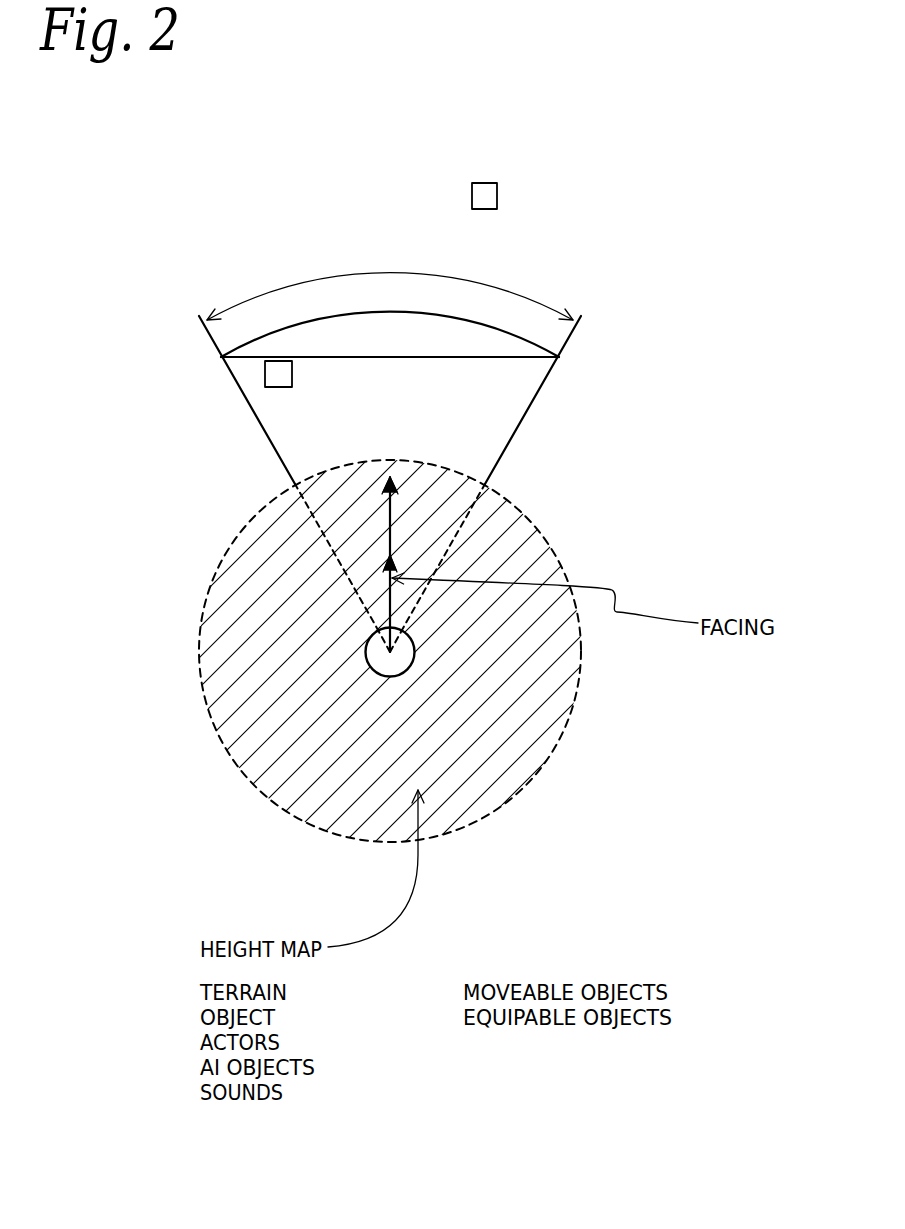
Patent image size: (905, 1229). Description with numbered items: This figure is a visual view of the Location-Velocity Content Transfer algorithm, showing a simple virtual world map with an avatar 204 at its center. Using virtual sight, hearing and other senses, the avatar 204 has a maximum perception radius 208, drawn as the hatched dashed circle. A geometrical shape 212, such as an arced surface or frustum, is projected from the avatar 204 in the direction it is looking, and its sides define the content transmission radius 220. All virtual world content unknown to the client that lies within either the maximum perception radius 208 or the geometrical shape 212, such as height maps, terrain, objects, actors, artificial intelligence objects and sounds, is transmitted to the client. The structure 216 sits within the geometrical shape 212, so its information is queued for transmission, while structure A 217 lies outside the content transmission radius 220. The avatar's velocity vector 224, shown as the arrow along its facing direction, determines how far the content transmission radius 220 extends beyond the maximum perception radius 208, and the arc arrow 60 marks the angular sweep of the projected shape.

The avatar 204 is at (413, 657).
The maximum perception radius 208 is at (335, 558).
The geometrical shape 212 is at (507, 328).
The structure 216 is at (275, 375).
The structure A 217 is at (502, 195).
The content transmission radius 220 is at (528, 418).
The velocity vector 224 is at (392, 543).
The arc arrow 60 is at (390, 286).